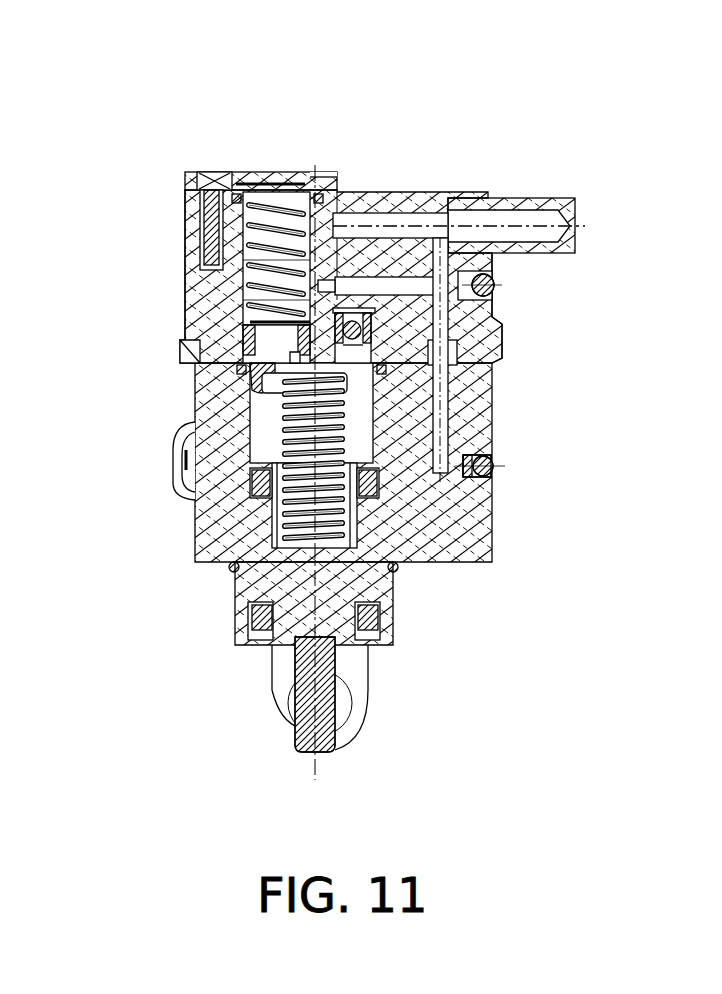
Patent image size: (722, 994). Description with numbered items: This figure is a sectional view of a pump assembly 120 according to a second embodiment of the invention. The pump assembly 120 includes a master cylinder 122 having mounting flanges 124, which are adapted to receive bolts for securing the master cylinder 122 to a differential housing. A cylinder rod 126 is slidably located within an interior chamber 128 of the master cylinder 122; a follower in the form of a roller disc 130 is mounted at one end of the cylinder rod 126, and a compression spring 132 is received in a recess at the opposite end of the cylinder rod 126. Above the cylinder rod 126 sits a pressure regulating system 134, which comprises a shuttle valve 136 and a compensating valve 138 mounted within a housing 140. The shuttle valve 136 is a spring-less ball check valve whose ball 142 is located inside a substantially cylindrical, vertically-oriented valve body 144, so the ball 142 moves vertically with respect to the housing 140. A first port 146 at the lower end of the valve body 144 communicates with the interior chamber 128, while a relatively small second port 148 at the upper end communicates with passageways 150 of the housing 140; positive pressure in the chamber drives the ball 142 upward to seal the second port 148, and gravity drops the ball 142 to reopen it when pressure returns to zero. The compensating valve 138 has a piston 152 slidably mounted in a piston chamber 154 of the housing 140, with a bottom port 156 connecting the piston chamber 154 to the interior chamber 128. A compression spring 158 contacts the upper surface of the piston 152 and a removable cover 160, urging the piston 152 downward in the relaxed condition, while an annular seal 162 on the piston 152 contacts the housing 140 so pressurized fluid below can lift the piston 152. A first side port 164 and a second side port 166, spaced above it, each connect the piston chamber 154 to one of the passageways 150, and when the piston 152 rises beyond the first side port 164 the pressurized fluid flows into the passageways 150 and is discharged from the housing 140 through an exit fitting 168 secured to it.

The pump assembly 120 is at (533, 118).
The master cylinder 122 is at (496, 514).
The mounting flanges 124 is at (178, 450).
The cylinder rod 126 is at (393, 590).
The interior chamber 128 is at (262, 388).
The roller disc 130 is at (300, 745).
The compression spring 132 is at (285, 415).
The pressure regulating system 134 is at (505, 267).
The shuttle valve 136 is at (493, 314).
The compensating valve 138 is at (241, 225).
The housing 140 is at (200, 205).
The ball 142 is at (500, 347).
The valve body 144 is at (497, 350).
The first port 146 is at (487, 407).
The second port 148 is at (377, 316).
The passageways 150 is at (493, 302).
The piston 152 is at (250, 300).
The piston chamber 154 is at (248, 260).
The bottom port 156 is at (245, 366).
The compression spring 158 is at (283, 205).
The removable cover 160 is at (243, 190).
The annular seal 162 is at (215, 340).
The first side port 164 is at (373, 222).
The second side port 166 is at (355, 222).
The exit fitting 168 is at (573, 198).